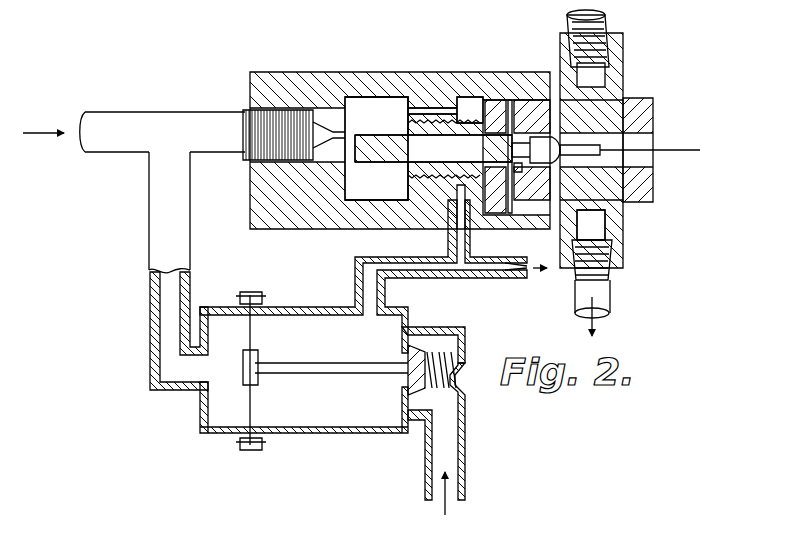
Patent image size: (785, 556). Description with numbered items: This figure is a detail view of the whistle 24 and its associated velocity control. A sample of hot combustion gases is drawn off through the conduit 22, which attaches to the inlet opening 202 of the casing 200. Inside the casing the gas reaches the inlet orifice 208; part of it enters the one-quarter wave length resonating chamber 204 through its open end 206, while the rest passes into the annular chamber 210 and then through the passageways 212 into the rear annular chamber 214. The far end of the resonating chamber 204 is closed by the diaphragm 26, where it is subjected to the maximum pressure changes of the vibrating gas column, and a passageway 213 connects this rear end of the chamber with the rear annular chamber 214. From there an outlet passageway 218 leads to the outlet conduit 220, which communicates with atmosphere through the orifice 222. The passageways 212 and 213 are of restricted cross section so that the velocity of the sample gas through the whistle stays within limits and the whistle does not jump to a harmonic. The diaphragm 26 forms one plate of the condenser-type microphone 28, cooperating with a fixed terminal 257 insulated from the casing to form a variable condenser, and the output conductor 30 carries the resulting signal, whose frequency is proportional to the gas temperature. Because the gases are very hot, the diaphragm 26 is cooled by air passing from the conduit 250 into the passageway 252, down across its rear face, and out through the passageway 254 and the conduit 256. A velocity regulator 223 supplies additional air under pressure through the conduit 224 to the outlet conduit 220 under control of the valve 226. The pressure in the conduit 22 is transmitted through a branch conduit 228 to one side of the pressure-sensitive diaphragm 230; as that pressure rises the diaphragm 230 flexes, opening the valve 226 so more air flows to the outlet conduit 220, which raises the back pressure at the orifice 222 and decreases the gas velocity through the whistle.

The conduit 22 is at (108, 116).
The whistle 24 is at (336, 69).
The diaphragm 26 is at (518, 150).
The condenser-type microphone 28 is at (633, 82).
The output conductor 30 is at (675, 150).
The casing 200 is at (355, 73).
The inlet opening 202 is at (245, 110).
The resonating chamber 204 is at (400, 158).
The open end 206 is at (355, 160).
The inlet orifice 208 is at (345, 134).
The annular chamber 210 is at (387, 100).
The passageways 212 is at (430, 104).
The passageway 213 is at (462, 142).
The rear annular chamber 214 is at (490, 73).
The outlet passageway 218 is at (447, 212).
The outlet conduit 220 is at (478, 270).
The orifice 222 is at (496, 263).
The velocity regulator 223 is at (306, 436).
The conduit 224 is at (450, 433).
The valve 226 is at (325, 372).
The branch conduit 228 is at (160, 226).
The pressure-sensitive diaphragm 230 is at (258, 340).
The conduit 250 is at (585, 18).
The passageway 252 is at (537, 88).
The passageway 254 is at (590, 203).
The conduit 256 is at (600, 290).
The fixed terminal 257 is at (510, 166).